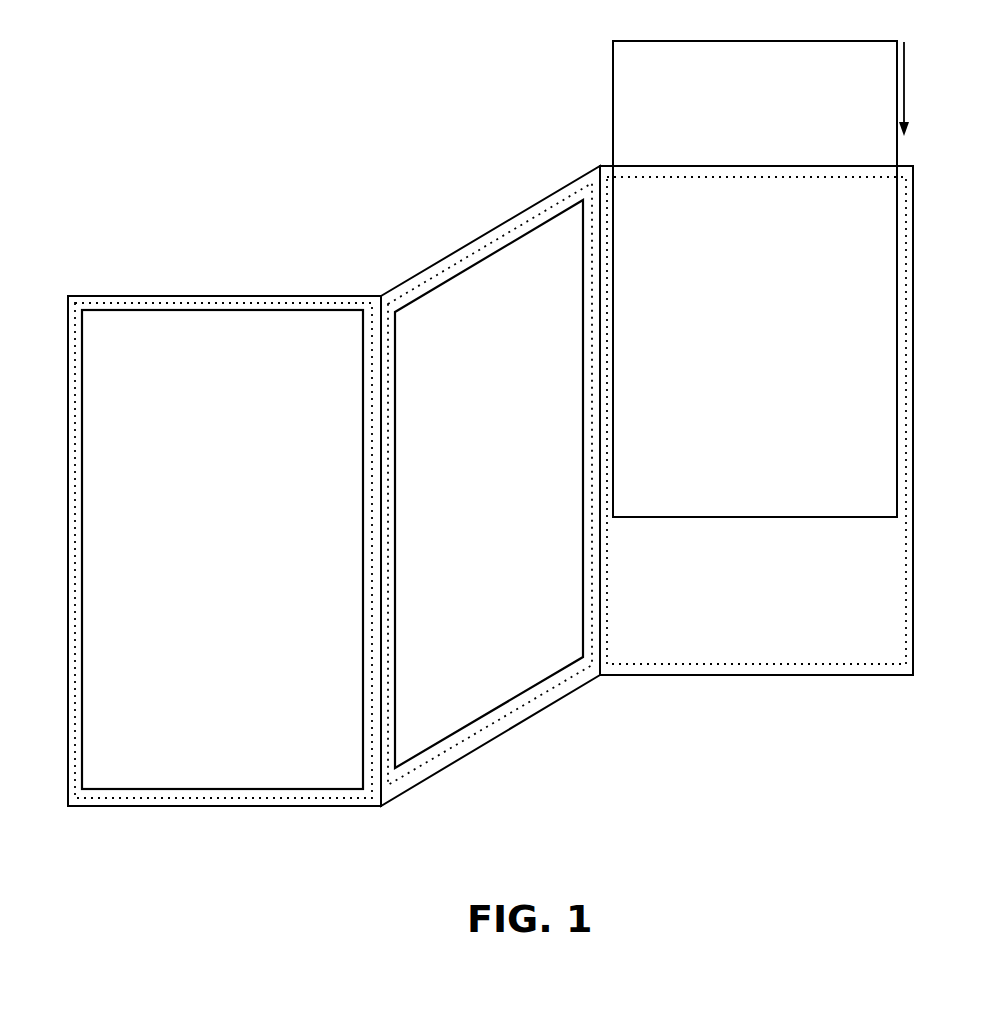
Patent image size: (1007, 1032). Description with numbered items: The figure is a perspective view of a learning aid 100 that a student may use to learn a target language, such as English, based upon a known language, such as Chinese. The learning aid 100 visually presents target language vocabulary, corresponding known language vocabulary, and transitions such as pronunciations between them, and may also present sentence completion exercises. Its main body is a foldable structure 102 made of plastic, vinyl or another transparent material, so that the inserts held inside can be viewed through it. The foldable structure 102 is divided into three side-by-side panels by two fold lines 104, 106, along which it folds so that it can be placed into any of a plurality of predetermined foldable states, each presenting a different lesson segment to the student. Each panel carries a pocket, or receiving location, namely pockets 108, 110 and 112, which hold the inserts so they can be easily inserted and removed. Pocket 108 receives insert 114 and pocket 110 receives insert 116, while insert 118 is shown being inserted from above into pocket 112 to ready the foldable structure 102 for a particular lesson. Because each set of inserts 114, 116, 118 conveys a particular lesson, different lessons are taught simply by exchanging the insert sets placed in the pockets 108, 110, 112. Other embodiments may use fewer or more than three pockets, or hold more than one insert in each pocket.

The learning aid 100 is at (204, 133).
The foldable structure 102 is at (67, 376).
The fold line 104 is at (378, 296).
The fold line 106 is at (598, 166).
The pocket 108 is at (240, 300).
The pocket 110 is at (521, 226).
The pocket 112 is at (915, 168).
The insert 114 is at (243, 593).
The insert 116 is at (505, 530).
The insert 118 is at (768, 340).